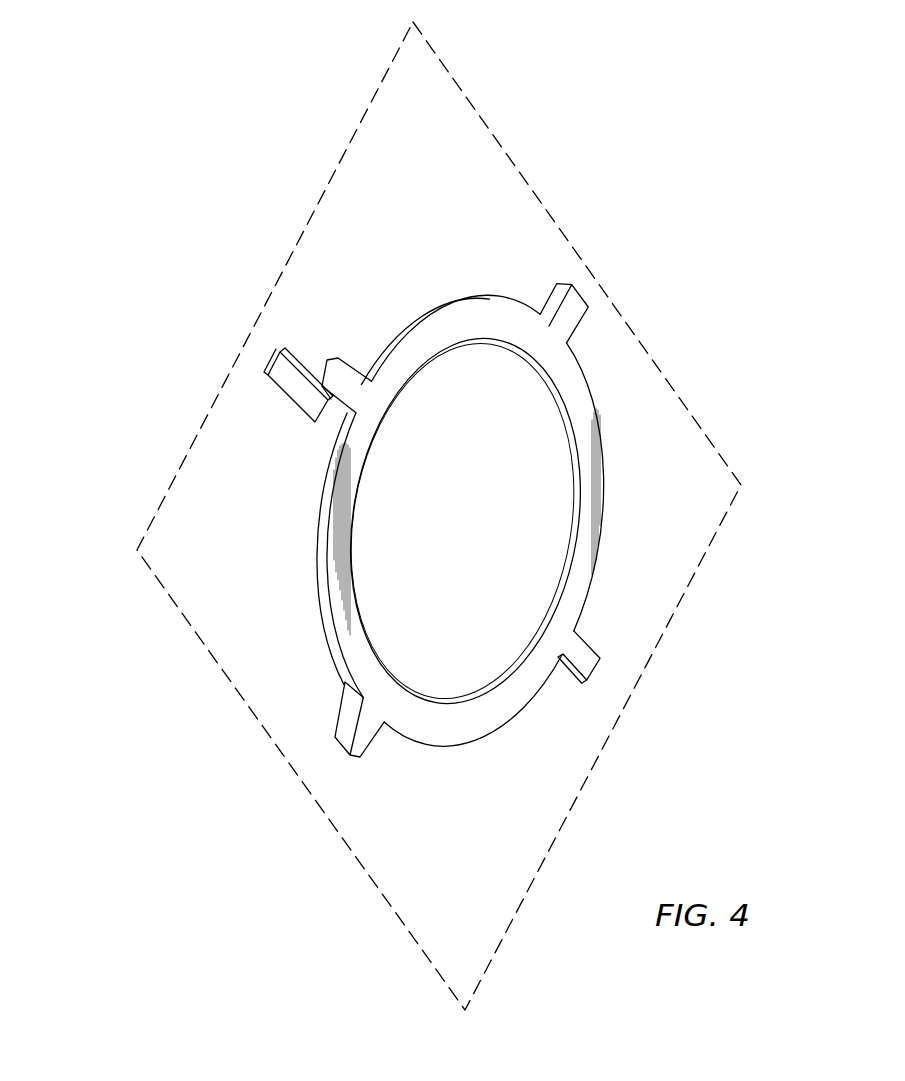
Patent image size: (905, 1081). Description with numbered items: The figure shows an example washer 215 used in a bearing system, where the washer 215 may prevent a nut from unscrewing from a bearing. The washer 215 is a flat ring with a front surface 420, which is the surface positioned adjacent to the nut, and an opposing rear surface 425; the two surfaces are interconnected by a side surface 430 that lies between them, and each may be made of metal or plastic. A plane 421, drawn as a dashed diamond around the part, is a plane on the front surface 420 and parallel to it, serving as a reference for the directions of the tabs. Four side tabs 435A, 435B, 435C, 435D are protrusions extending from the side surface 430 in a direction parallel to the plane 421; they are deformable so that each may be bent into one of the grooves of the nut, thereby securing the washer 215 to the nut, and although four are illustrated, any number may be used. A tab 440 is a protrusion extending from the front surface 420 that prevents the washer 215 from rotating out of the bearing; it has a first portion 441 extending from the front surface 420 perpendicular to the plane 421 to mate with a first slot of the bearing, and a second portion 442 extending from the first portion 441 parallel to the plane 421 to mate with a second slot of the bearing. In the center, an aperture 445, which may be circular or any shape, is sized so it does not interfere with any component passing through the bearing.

The washer 215 is at (235, 124).
The plane 421 is at (551, 213).
The front surface 420 is at (360, 346).
The rear surface 425 is at (353, 650).
The side surface 430 is at (397, 332).
The side tab 435A is at (572, 309).
The side tab 435B is at (590, 665).
The side tab 435C is at (366, 742).
The side tab 435D is at (347, 387).
The tab 440 is at (176, 454).
The first portion 441 is at (318, 440).
The second portion 442 is at (287, 400).
The aperture 445 is at (460, 667).